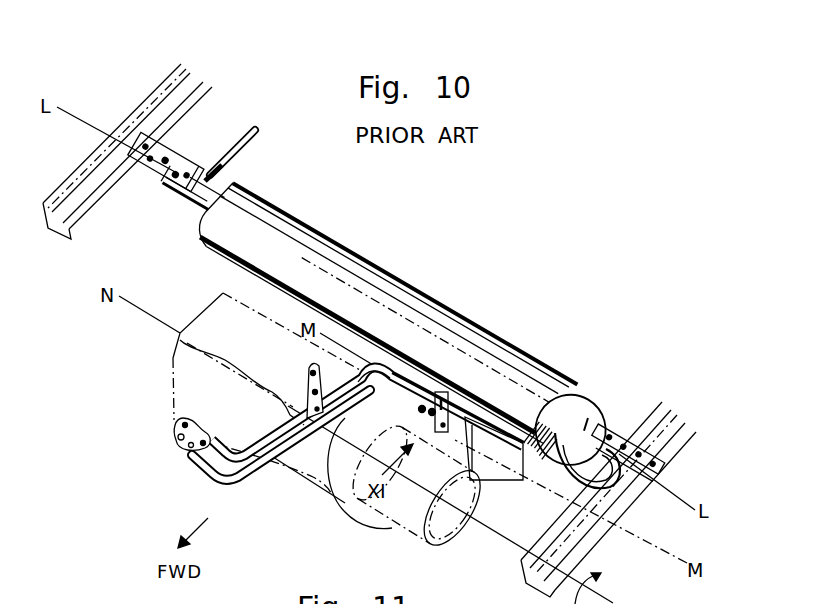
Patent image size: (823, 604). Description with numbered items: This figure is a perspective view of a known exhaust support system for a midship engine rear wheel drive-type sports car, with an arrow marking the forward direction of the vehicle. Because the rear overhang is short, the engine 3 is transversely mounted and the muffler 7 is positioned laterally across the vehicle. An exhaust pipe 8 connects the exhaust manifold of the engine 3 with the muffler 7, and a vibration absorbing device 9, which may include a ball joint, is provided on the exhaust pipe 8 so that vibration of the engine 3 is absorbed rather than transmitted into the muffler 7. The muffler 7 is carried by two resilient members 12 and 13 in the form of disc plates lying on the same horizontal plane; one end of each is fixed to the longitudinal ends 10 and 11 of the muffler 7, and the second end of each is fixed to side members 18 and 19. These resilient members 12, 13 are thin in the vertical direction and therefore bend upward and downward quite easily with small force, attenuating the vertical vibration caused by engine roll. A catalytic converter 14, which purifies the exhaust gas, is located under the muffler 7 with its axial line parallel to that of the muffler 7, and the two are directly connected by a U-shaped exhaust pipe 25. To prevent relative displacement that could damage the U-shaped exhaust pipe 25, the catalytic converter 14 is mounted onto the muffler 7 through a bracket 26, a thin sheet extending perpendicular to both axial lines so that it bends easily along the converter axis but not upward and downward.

The engine 3 is at (193, 322).
The muffler 7 is at (413, 287).
The exhaust pipe 8 is at (372, 360).
The vibration absorbing device 9 is at (350, 400).
The longitudinal end of the muffler 10 is at (588, 395).
The longitudinal end of the muffler 11 is at (233, 177).
The resilient member 12 is at (617, 427).
The resilient member 13 is at (177, 160).
The catalytic converter 14 is at (502, 485).
The side member 18 is at (683, 452).
The side member 19 is at (148, 101).
The U-shaped exhaust pipe 25 is at (627, 509).
The bracket 26 is at (441, 392).